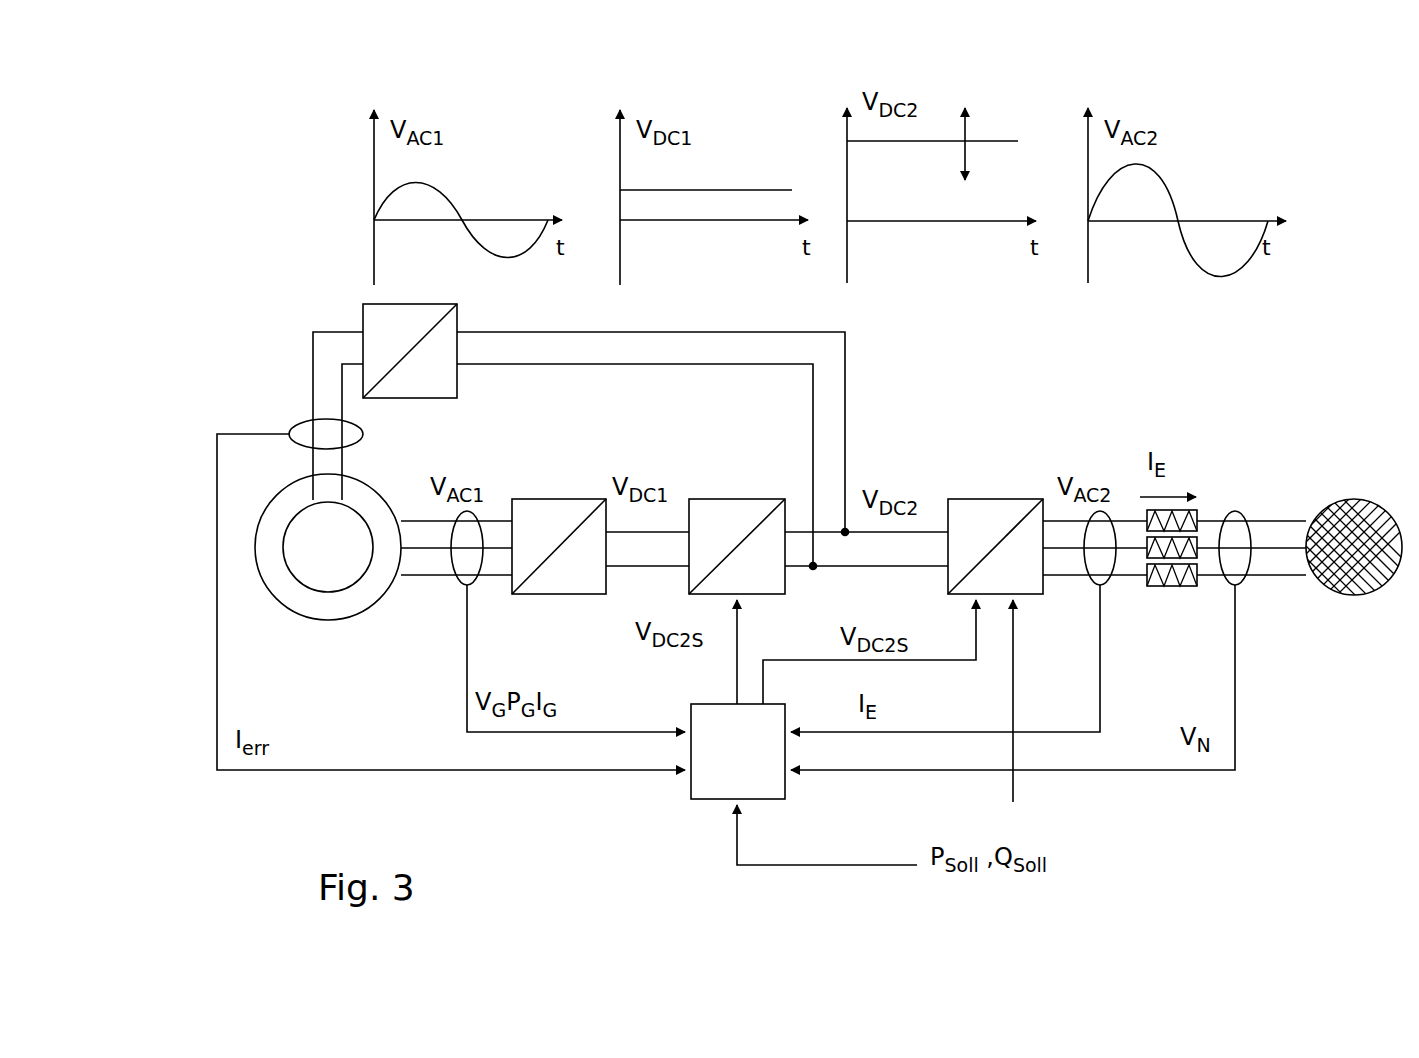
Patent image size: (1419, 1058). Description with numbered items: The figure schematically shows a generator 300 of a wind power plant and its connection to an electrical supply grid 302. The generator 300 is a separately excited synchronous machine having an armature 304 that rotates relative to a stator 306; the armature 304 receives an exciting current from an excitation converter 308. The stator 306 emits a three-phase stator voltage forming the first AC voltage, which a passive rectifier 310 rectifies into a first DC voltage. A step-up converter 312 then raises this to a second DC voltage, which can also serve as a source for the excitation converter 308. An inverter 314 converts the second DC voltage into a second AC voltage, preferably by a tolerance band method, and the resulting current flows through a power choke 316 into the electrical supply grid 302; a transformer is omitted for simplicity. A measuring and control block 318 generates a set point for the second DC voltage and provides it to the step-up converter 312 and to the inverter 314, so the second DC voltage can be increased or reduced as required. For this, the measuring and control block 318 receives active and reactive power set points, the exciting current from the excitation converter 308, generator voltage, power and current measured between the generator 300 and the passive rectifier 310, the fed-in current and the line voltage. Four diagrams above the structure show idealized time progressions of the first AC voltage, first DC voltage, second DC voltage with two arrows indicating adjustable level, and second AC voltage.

The generator 300 is at (244, 575).
The electrical supply grid 302 is at (1330, 498).
The armature 304 is at (368, 573).
The stator 306 is at (353, 620).
The excitation converter 308 is at (430, 400).
The passive rectifier 310 is at (521, 498).
The step-up converter 312 is at (727, 498).
The inverter 314 is at (975, 498).
The power choke 316 is at (1170, 596).
The measuring and control block 318 is at (705, 800).